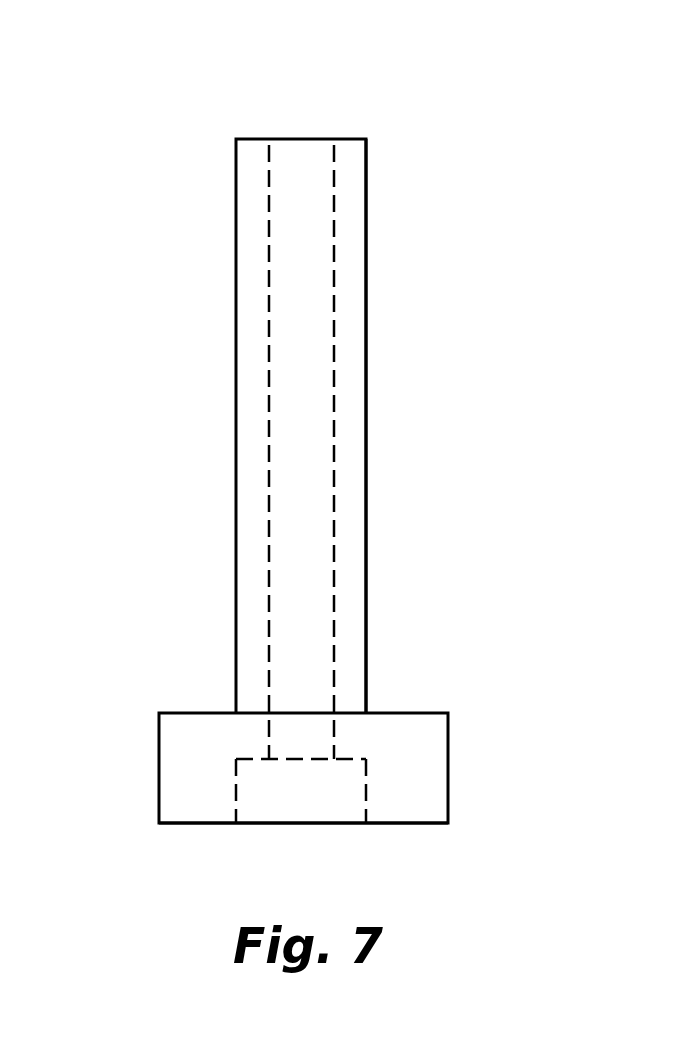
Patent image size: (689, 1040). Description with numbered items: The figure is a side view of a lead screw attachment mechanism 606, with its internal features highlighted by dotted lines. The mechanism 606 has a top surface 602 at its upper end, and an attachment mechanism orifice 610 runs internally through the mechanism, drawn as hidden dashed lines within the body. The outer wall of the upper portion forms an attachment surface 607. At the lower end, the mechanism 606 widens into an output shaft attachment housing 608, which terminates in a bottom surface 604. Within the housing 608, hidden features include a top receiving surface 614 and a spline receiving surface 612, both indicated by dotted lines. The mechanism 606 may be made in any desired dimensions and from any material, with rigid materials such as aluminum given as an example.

The top surface 602 is at (312, 139).
The bottom surface 604 is at (403, 823).
The lead screw attachment mechanism 606 is at (147, 128).
The attachment surface 607 is at (347, 623).
The output shaft attachment housing 608 is at (448, 770).
The attachment mechanism orifice 610 is at (290, 317).
The spline receiving surface 612 is at (350, 773).
The top receiving surface 614 is at (250, 758).